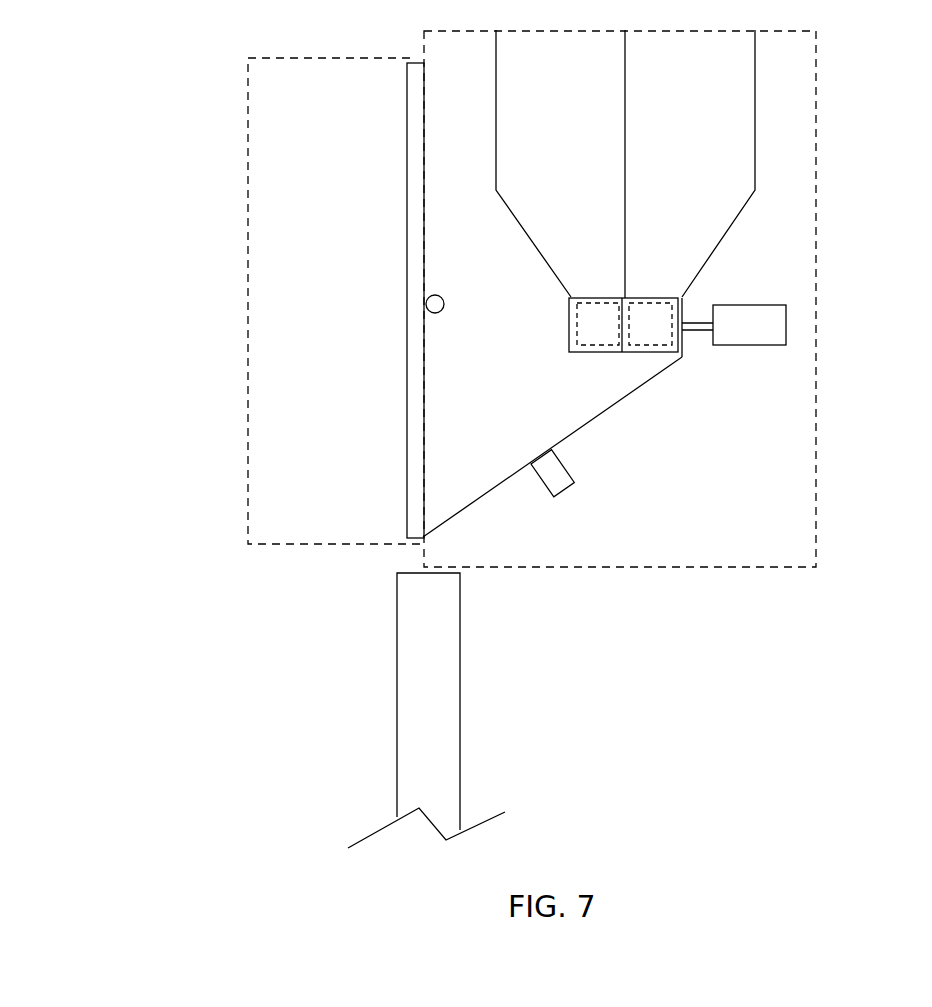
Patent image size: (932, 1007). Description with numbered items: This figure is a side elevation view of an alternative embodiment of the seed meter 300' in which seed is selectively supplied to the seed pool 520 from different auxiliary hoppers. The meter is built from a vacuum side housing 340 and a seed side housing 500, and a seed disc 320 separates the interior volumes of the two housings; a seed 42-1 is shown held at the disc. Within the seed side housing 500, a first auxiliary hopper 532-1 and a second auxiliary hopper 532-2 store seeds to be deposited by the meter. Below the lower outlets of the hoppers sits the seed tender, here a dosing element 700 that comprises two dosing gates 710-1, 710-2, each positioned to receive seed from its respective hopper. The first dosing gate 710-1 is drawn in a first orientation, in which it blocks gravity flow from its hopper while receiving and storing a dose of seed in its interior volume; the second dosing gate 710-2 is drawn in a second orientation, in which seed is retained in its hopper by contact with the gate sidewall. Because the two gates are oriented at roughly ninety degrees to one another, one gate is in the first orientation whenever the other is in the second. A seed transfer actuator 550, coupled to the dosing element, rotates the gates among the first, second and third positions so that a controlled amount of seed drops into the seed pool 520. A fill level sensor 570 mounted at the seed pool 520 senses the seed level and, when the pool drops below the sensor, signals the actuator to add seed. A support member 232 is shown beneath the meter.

The seed meter 300' is at (153, 285).
The vacuum side housing 340 is at (247, 188).
The seed side housing 500 is at (822, 200).
The seed disc 320 is at (406, 213).
The seed 42-1 is at (437, 313).
The first auxiliary hopper 532-1 is at (531, 91).
The second auxiliary hopper 532-2 is at (653, 91).
The dosing element 700 is at (625, 355).
The first dosing gate 710-1 is at (653, 330).
The second dosing gate 710-2 is at (597, 330).
The seed transfer actuator 550 is at (733, 337).
The seed pool 520 is at (448, 468).
The fill level sensor 570 is at (560, 495).
The post 232 is at (460, 759).